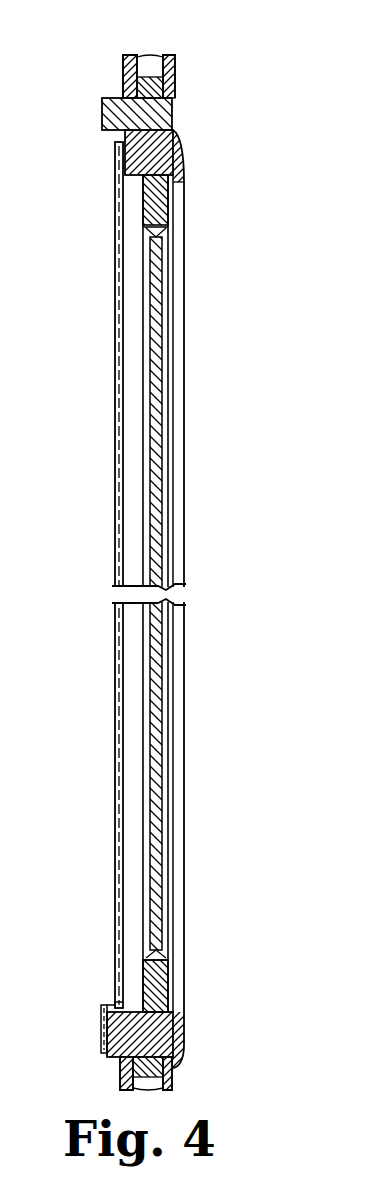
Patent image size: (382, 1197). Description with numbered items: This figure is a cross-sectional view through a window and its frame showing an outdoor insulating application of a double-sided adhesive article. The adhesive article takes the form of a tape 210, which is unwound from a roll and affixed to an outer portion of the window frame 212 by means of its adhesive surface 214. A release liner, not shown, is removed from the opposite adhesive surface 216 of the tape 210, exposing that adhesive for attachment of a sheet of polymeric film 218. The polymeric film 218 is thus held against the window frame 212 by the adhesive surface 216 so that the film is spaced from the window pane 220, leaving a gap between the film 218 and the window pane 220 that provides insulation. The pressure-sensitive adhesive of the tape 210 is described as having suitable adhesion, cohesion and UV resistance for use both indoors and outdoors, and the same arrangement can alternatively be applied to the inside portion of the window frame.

The tape 210 is at (148, 575).
The window frame 212 is at (166, 148).
The adhesive surface 214 is at (130, 1037).
The adhesive surface 216 is at (106, 1040).
The polymeric film 218 is at (113, 623).
The window pane 220 is at (170, 607).